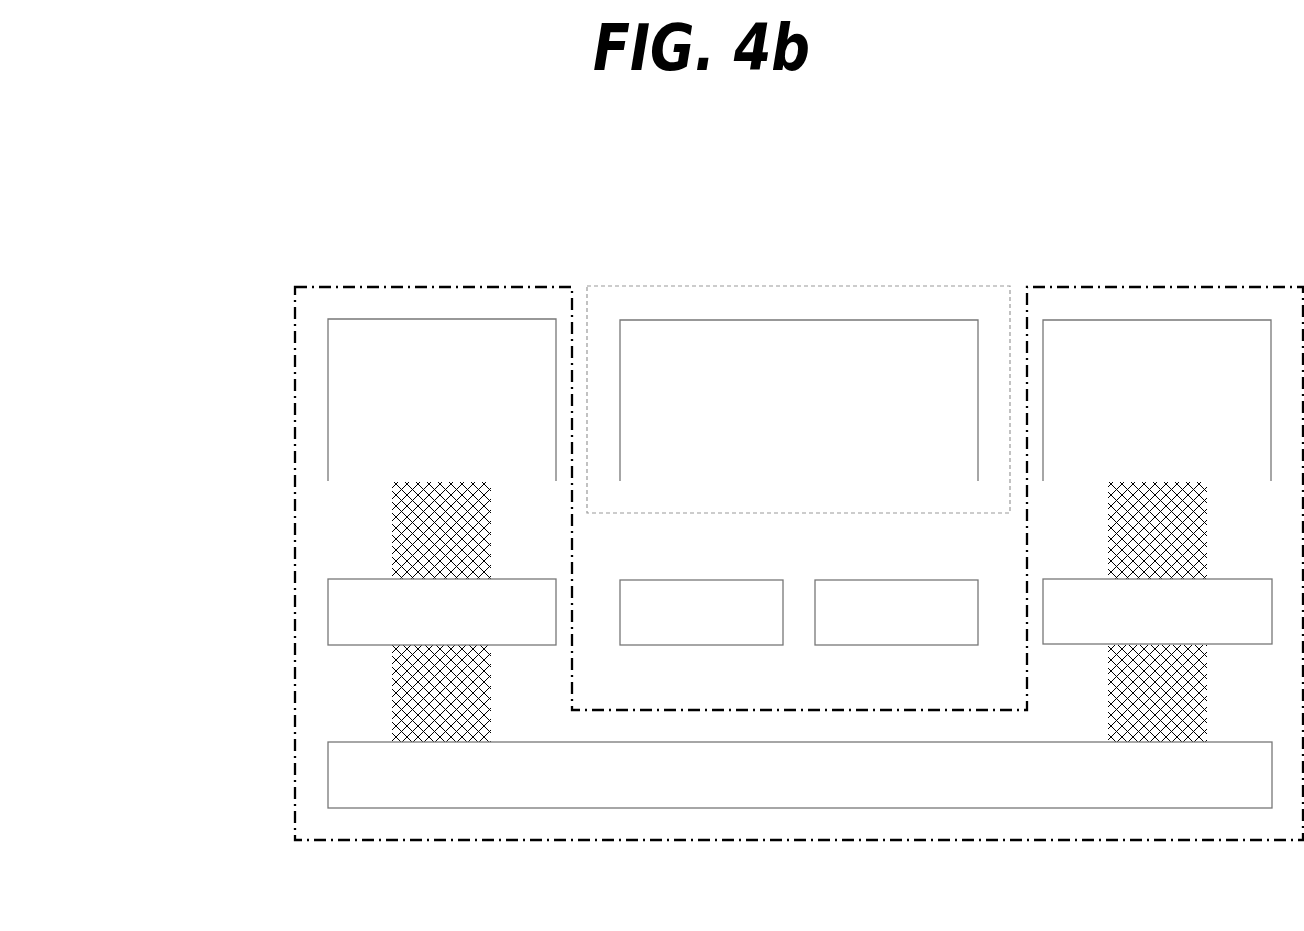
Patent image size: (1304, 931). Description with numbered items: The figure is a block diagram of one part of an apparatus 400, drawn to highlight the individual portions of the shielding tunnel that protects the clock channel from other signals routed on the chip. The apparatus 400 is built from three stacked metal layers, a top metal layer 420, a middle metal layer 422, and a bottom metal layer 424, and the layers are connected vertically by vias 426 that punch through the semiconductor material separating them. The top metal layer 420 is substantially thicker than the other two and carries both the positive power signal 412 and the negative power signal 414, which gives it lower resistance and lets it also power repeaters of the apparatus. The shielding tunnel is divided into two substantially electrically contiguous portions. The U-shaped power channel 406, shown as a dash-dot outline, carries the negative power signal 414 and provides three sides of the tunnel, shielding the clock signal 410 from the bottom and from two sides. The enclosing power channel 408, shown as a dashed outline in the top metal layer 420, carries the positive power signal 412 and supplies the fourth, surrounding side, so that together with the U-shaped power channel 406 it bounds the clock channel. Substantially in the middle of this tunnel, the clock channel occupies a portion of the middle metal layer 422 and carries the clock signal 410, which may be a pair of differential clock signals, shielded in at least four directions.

The apparatus 400 is at (715, 448).
The U-shaped power channel 406 is at (335, 287).
The enclosing power channel 408 is at (847, 287).
The clock signal 410 is at (799, 612).
The positive power signal 412 is at (799, 400).
The negative power signal 414 is at (442, 400).
The top metal layer 420 is at (706, 400).
The middle metal layer 422 is at (701, 612).
The bottom metal layer 424 is at (699, 775).
The via 426 is at (392, 548).